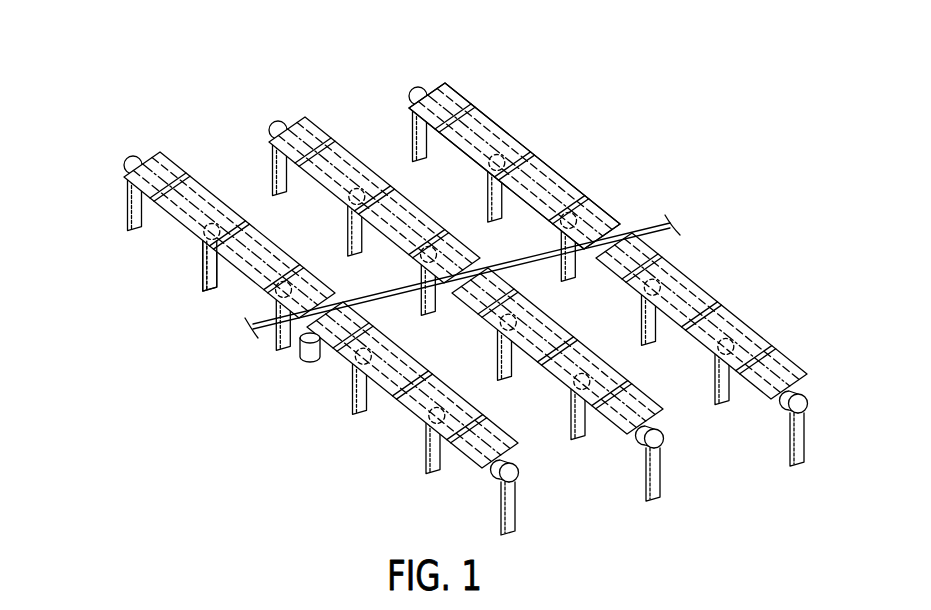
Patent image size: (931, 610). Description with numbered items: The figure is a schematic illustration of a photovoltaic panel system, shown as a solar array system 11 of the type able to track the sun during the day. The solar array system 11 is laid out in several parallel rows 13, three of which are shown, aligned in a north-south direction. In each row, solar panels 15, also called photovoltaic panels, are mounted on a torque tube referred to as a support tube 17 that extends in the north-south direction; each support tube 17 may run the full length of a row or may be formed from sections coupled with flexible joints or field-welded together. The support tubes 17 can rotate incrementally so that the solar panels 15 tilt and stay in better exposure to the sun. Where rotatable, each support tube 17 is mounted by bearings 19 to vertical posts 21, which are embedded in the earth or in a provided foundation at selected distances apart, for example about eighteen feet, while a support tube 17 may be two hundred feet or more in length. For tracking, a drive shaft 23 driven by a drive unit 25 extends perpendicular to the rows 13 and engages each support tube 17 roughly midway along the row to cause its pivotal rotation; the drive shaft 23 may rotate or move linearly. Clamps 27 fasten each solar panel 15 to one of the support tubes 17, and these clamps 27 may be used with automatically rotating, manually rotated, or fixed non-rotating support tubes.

The solar array system 11 is at (654, 135).
The rows 13 is at (138, 162).
The solar panels 15 is at (440, 93).
The support tube 17 is at (485, 122).
The bearings 19 is at (420, 415).
The vertical posts 21 is at (203, 272).
The drive shaft 23 is at (662, 240).
The drive unit 25 is at (306, 362).
The clamps 27 is at (762, 350).